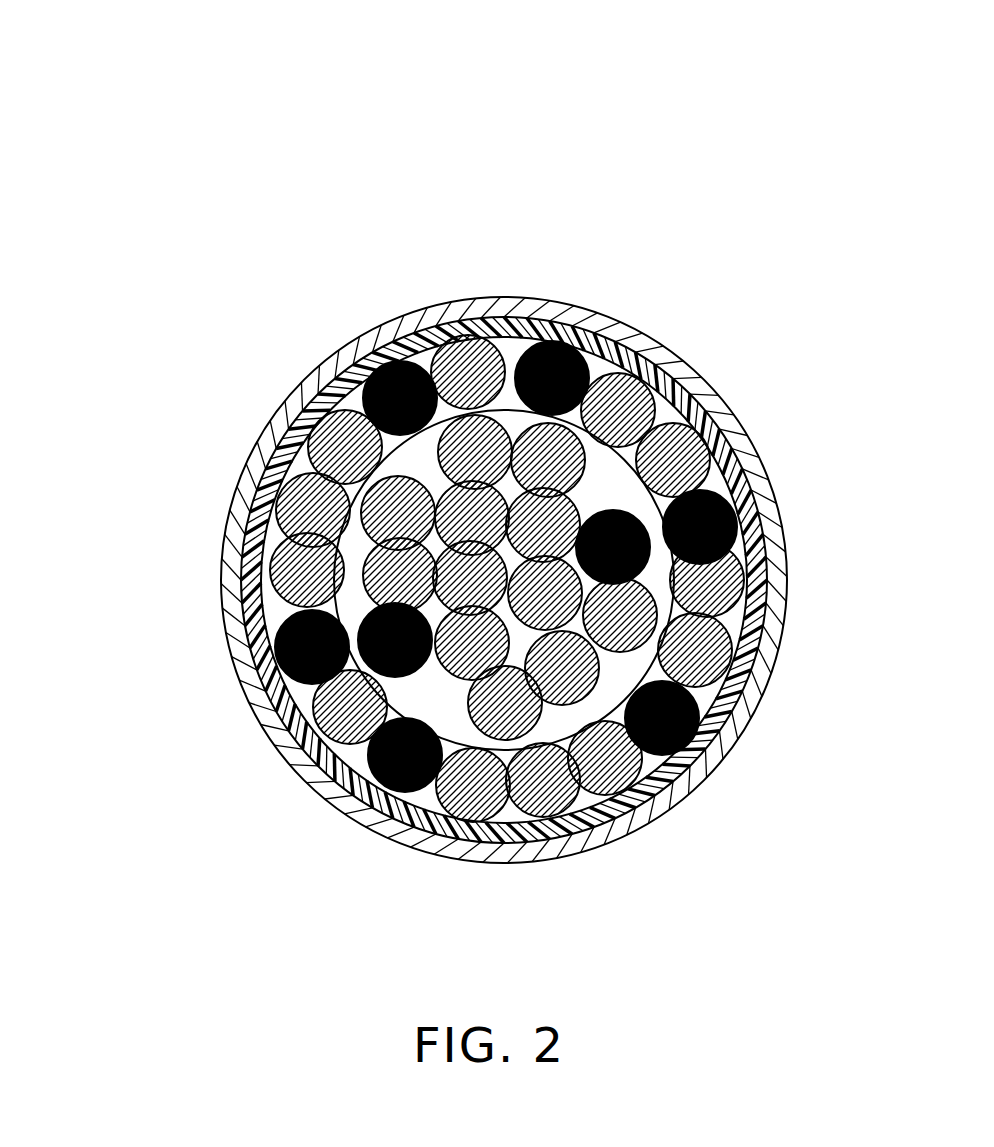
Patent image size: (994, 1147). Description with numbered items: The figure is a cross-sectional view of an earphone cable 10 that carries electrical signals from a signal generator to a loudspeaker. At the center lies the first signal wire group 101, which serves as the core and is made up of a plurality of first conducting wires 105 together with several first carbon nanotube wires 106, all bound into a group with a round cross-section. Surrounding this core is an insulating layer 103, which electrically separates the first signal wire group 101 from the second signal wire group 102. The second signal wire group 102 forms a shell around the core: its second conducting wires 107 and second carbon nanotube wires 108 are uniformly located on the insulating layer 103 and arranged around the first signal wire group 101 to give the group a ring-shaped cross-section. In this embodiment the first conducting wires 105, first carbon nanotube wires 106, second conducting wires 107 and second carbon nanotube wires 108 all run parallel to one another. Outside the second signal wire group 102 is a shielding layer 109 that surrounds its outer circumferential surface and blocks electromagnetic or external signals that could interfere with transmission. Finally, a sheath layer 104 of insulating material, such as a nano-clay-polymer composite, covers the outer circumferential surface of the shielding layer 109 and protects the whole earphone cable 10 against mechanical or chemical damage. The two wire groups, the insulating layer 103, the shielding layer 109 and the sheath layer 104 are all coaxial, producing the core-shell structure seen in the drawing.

The earphone cable 10 is at (470, 130).
The first signal wire group 101 is at (808, 333).
The second signal wire group 102 is at (112, 438).
The insulating layer 103 is at (665, 648).
The sheath layer 104 is at (519, 302).
The first conducting wires 105 is at (590, 445).
The first carbon nanotube wire 106 is at (570, 500).
The second conducting wires 107 is at (295, 562).
The second carbon nanotube wire 108 is at (282, 628).
The shielding layer 109 is at (592, 328).